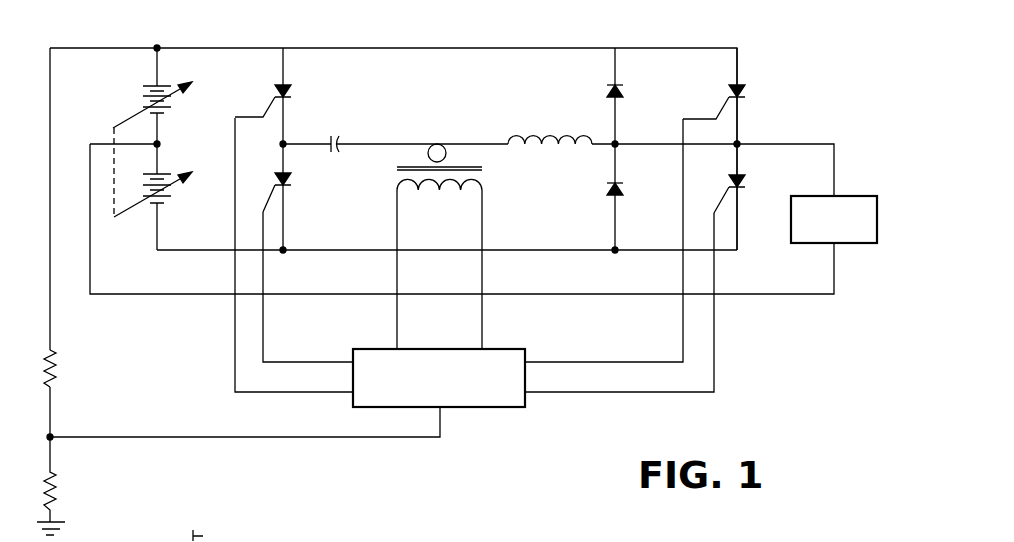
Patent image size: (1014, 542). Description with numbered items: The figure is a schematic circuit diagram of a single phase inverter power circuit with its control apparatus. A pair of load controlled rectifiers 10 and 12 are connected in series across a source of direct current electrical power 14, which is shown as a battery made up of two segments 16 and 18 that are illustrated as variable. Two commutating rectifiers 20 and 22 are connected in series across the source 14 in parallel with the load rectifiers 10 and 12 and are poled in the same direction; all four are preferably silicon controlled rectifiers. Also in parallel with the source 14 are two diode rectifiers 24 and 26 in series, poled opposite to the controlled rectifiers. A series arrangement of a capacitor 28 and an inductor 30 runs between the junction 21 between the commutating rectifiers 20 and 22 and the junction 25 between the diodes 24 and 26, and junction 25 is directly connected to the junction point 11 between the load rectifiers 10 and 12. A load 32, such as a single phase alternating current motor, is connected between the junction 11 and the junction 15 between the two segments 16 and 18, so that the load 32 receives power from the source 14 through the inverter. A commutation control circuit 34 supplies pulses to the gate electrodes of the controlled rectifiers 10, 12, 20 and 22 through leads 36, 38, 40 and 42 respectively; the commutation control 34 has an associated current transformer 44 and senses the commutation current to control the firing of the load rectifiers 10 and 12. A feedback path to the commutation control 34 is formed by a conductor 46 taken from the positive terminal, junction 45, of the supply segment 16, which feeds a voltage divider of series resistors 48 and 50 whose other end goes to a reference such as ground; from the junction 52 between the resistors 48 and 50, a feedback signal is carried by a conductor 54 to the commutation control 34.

The load controlled rectifier 10 is at (746, 90).
The junction point 11 is at (742, 136).
The load controlled rectifier 12 is at (746, 183).
The source of direct current electrical power 14 is at (162, 149).
The junction 15 is at (159, 142).
The supply segment 16 is at (176, 106).
The supply segment 18 is at (172, 194).
The commutating rectifier 20 is at (292, 98).
The junction 21 is at (286, 142).
The commutating rectifier 22 is at (292, 185).
The diode rectifier 24 is at (624, 88).
The junction 25 is at (620, 142).
The diode rectifier 26 is at (624, 190).
The capacitor 28 is at (337, 132).
The inductor 30 is at (549, 130).
The load 32 is at (860, 194).
The commutation control circuit 34 is at (522, 346).
The lead 36 is at (672, 346).
The lead 38 is at (716, 352).
The lead 40 is at (232, 332).
The lead 42 is at (266, 340).
The current transformer 44 is at (488, 183).
The junction 45 is at (158, 46).
The conductor 46 is at (68, 48).
The resistor 48 is at (62, 376).
The resistor 50 is at (66, 490).
The junction 52 is at (54, 432).
The conductor 54 is at (202, 434).